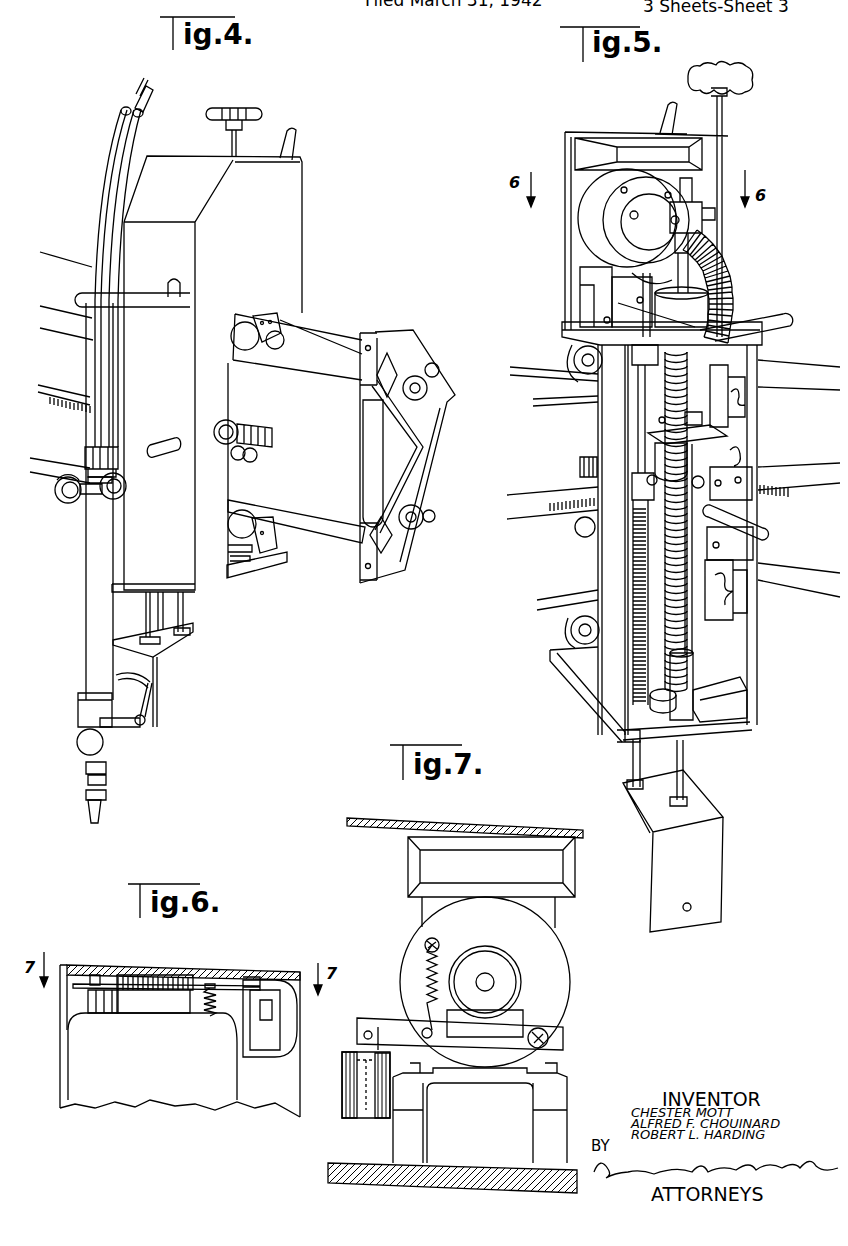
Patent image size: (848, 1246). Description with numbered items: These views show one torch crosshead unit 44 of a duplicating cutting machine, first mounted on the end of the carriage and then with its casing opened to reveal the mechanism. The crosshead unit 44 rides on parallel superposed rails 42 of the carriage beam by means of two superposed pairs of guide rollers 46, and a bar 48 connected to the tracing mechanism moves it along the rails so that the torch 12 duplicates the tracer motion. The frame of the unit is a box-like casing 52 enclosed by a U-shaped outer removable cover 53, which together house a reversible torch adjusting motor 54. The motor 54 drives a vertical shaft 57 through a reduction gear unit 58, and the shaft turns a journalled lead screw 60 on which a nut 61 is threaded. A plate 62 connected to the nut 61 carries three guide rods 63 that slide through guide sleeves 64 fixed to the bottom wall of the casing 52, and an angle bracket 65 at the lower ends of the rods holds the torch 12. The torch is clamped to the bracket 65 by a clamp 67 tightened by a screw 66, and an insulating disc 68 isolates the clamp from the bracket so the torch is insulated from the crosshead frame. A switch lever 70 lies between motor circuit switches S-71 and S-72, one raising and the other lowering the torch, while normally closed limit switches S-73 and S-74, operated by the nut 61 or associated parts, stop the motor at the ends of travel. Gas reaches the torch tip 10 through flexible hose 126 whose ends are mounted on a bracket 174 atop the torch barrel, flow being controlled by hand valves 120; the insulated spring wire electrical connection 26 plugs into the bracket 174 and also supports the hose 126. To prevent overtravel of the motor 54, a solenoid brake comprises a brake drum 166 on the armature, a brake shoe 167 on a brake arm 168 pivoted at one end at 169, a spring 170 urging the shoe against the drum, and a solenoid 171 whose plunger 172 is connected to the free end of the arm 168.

In FIG. 4, the torch tip 10 is at (100, 817).
In FIG. 4, the torch 12 is at (90, 557).
In FIG. 4, the electrical connection 26 is at (102, 418).
In FIG. 4, the rails 42 is at (318, 557).
In FIG. 4, the torch crosshead unit 44 is at (310, 254).
In FIG. 4, the guide rollers 46 is at (266, 525).
In FIG. 5, the guide rollers 46 is at (570, 630).
In FIG. 4, the bar 48 is at (272, 437).
In FIG. 4, the frame casing 52 is at (263, 573).
In FIG. 5, the frame casing 52 is at (603, 690).
In FIG. 4, the outer removable cover 53 is at (210, 587).
In FIG. 5, the torch adjusting motor 54 is at (587, 217).
In FIG. 6, the torch adjusting motor 54 is at (160, 1090).
In FIG. 7, the torch adjusting motor 54 is at (565, 960).
In FIG. 5, the vertical shaft 57 is at (690, 268).
In FIG. 5, the reduction gear unit 58 is at (704, 223).
In FIG. 5, the lead screw 60 is at (690, 643).
In FIG. 5, the nut 61 is at (660, 453).
In FIG. 5, the plate 62 is at (660, 436).
In FIG. 4, the guide rods 63 is at (150, 645).
In FIG. 5, the guide rods 63 is at (685, 765).
In FIG. 5, the guide sleeves 64 is at (686, 668).
In FIG. 4, the angle bracket 65 is at (157, 673).
In FIG. 5, the angle bracket 65 is at (720, 850).
In FIG. 4, the screw 66 is at (103, 748).
In FIG. 4, the clamp 67 is at (142, 728).
In FIG. 4, the insulating disc 68 is at (150, 692).
In FIG. 4, the switch lever 70 is at (155, 441).
In FIG. 5, the switch lever 70 is at (767, 532).
In FIG. 4, the hand valves 120 is at (123, 490).
In FIG. 4, the flexible hose 126 is at (120, 138).
In FIG. 6, the brake drum 166 is at (157, 977).
In FIG. 7, the brake drum 166 is at (521, 980).
In FIG. 7, the brake shoe 167 is at (525, 1015).
In FIG. 5, the brake arm 168 is at (580, 250).
In FIG. 6, the brake arm 168 is at (227, 993).
In FIG. 7, the brake arm 168 is at (493, 1045).
In FIG. 6, the pivot 169 is at (100, 977).
In FIG. 7, the pivot 169 is at (549, 1038).
In FIG. 6, the spring 170 is at (207, 1016).
In FIG. 7, the spring 170 is at (423, 960).
In FIG. 6, the solenoid 171 is at (293, 1013).
In FIG. 7, the solenoid 171 is at (341, 1110).
In FIG. 7, the plunger 172 is at (365, 1075).
In FIG. 4, the bracket 174 is at (118, 463).
In FIG. 5, the motor circuit switch S-71 is at (743, 483).
In FIG. 5, the motor circuit switch S-72 is at (737, 553).
In FIG. 5, the limit switch S-73 is at (737, 418).
In FIG. 5, the limit switch S-74 is at (733, 615).